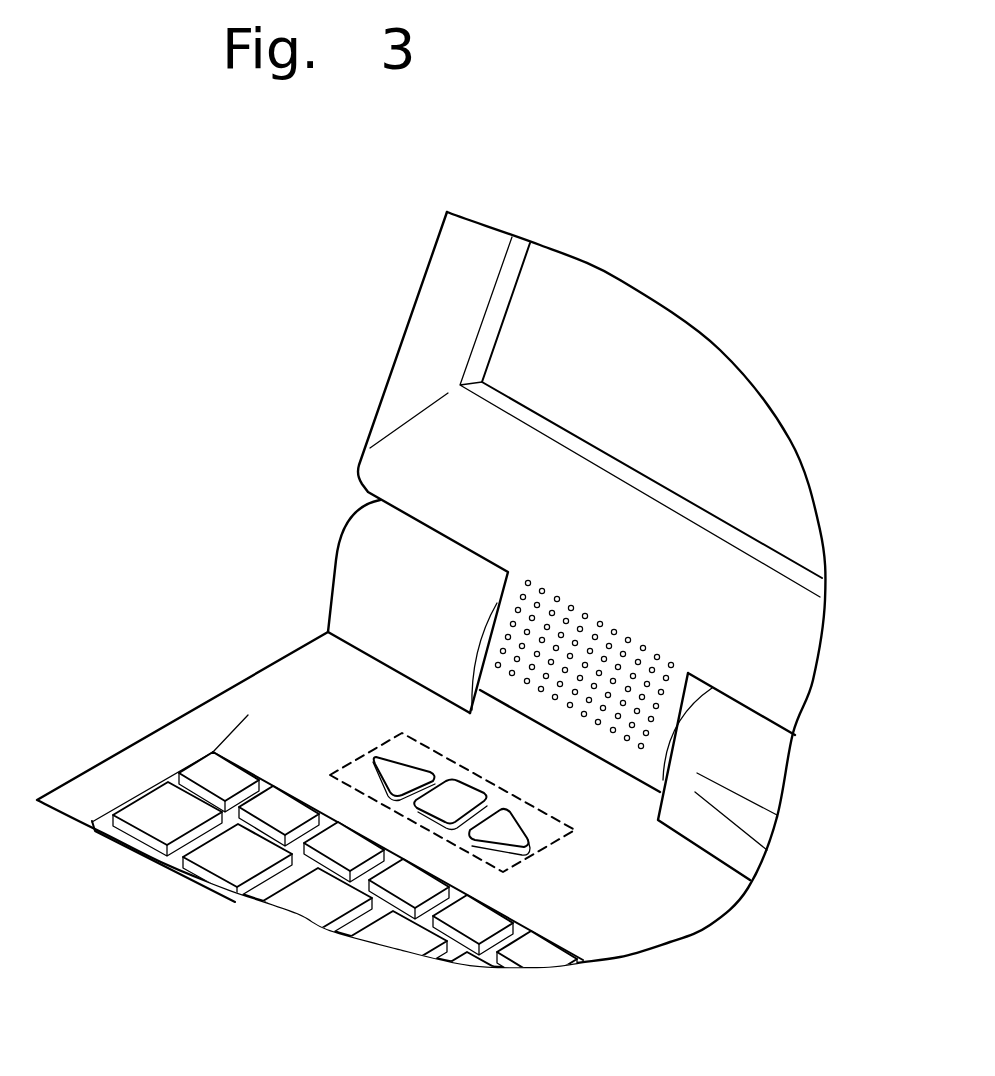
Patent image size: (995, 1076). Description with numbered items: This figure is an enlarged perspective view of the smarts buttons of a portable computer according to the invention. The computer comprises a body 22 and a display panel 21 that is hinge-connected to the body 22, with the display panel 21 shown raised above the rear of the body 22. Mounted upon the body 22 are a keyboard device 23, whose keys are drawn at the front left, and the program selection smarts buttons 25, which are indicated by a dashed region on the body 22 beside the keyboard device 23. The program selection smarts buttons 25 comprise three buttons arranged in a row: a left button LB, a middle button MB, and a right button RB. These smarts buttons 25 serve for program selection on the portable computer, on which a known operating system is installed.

The display panel 21 is at (420, 283).
The body 22 is at (187, 710).
The keyboard device 23 is at (158, 813).
The program selection smarts buttons 25 is at (358, 752).
The left button LB is at (403, 765).
The middle button MB is at (458, 792).
The right button RB is at (508, 823).